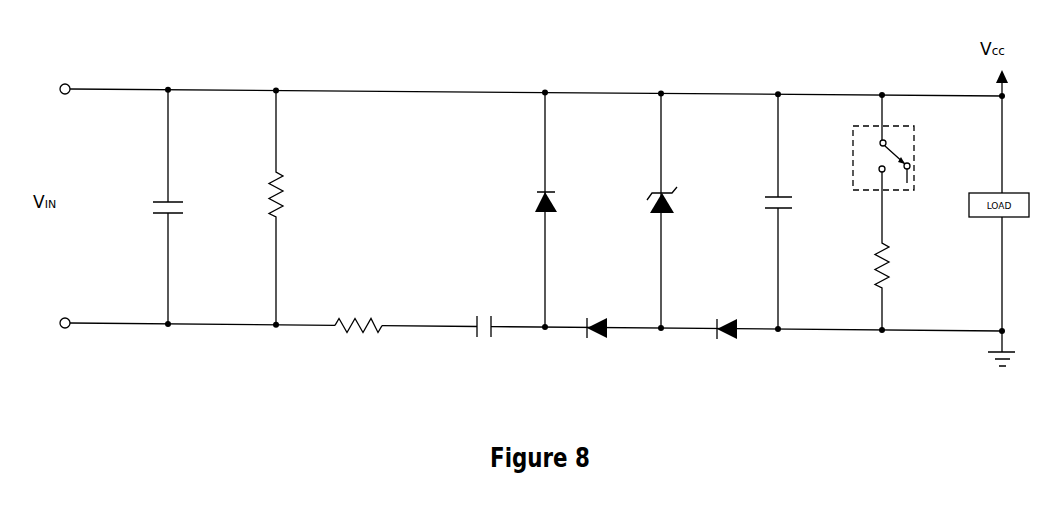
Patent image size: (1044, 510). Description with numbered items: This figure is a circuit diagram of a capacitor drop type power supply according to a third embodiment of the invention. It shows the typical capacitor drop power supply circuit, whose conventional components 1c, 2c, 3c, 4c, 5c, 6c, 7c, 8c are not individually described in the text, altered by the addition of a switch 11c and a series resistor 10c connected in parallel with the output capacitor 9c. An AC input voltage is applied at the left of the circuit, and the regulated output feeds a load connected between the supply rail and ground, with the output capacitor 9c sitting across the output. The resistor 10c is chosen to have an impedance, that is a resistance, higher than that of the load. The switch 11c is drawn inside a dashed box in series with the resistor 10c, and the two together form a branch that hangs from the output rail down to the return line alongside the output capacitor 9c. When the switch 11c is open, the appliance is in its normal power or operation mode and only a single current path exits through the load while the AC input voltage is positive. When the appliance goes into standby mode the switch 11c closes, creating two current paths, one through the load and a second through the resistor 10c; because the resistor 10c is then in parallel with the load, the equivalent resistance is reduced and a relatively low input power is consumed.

The input capacitor 1c is at (149, 207).
The input resistor 2c is at (256, 208).
The series resistor 3c is at (358, 311).
The series capacitor 4c is at (475, 313).
The diode 5c is at (522, 210).
The diode 6c is at (593, 315).
The zener diode 7c is at (644, 211).
The diode 8c is at (718, 316).
The output capacitor 9c is at (759, 211).
The series resistor 10c is at (861, 251).
The switch 11c is at (874, 142).